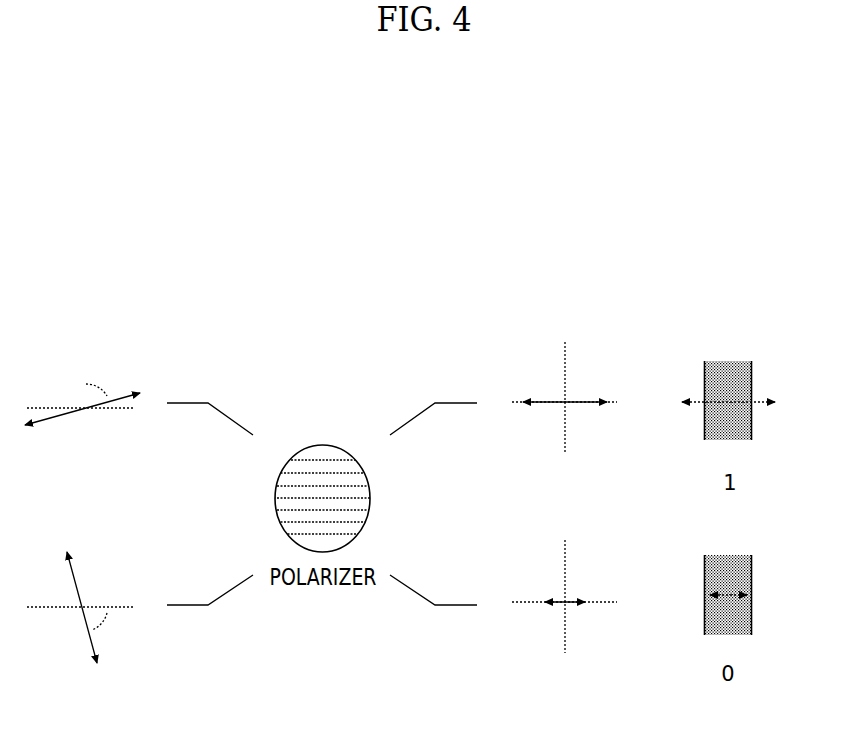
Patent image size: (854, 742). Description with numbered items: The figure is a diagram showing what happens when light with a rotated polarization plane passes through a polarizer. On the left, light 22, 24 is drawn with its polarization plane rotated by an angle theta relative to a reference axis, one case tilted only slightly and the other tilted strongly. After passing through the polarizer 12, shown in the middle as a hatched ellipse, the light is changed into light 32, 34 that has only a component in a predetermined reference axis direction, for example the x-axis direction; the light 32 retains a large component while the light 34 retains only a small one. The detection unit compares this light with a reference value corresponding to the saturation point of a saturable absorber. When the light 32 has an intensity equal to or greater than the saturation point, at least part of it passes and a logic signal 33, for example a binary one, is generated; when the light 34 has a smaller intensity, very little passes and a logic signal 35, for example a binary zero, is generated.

The polarizer 12 is at (322, 444).
The light with a rotated polarization plane 22 is at (128, 355).
The light with a rotated polarization plane 24 is at (113, 567).
The light having a component in the reference axis direction 32 is at (557, 333).
The logic signal 33 is at (760, 332).
The light having a component in the reference axis direction 34 is at (557, 542).
The logic signal 35 is at (753, 538).